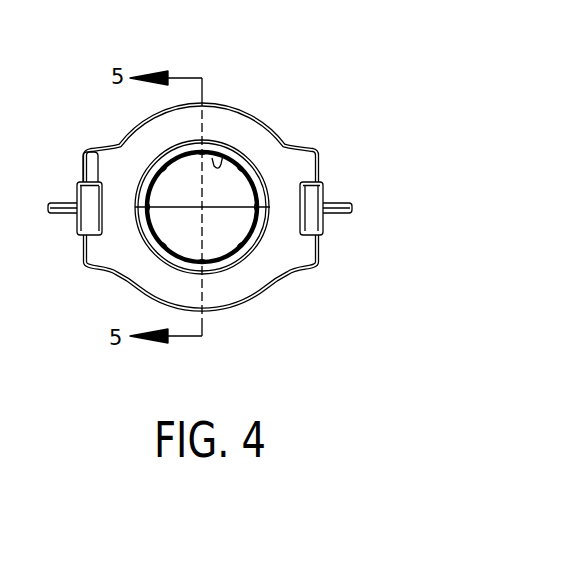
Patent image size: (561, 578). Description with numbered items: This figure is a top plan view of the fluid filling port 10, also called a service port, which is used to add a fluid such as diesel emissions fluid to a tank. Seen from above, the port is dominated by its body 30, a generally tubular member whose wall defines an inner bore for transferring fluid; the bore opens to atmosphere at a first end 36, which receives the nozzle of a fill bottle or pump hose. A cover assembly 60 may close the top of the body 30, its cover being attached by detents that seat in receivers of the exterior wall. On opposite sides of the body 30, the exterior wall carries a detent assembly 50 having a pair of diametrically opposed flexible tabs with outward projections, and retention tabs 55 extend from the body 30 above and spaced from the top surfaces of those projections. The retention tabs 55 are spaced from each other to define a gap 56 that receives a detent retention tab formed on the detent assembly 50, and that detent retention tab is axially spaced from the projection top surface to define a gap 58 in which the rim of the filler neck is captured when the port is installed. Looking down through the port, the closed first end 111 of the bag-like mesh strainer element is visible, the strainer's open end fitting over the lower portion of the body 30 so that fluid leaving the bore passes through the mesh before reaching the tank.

The fluid filling port 10 is at (206, 187).
The body 30 is at (217, 90).
The first end 36 is at (223, 155).
The detent assembly 50 is at (71, 227).
The retention tabs 55 is at (80, 163).
The gap 56 is at (95, 180).
The gap 58 is at (83, 218).
The cover assembly 60 is at (238, 287).
The closed first end 111 is at (180, 207).